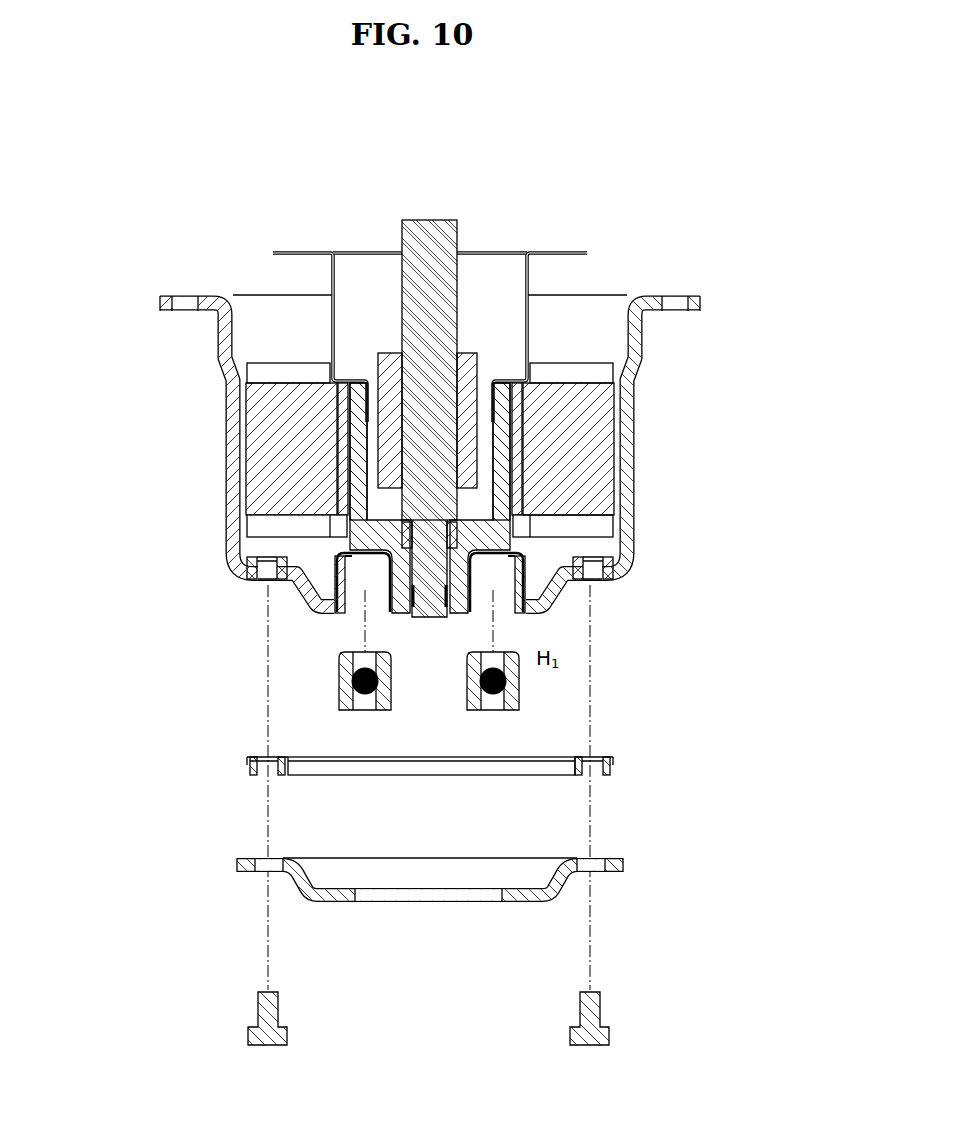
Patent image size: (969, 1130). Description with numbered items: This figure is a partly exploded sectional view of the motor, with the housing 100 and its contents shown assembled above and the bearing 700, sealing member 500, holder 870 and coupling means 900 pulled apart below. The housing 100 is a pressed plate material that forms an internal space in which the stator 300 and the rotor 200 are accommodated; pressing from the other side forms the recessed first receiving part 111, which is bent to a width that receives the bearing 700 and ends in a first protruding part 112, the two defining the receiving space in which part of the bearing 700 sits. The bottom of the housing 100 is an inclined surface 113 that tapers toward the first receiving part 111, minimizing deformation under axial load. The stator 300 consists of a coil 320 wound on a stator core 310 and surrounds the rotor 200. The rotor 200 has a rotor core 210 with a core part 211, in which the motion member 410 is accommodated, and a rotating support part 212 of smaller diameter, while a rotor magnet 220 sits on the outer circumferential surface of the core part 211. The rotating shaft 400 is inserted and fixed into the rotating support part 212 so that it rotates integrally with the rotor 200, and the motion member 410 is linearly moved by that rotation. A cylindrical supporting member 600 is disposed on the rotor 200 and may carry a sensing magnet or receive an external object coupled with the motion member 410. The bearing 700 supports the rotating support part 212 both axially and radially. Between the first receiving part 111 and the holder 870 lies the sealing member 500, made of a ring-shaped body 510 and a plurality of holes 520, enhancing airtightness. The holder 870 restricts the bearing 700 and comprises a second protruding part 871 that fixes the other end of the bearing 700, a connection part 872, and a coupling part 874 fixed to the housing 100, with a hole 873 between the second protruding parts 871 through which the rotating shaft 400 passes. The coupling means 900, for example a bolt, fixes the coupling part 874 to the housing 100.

The housing 100 is at (640, 335).
The first receiving part 111 is at (523, 584).
The first protruding part 112 is at (507, 548).
The inclined surface 113 is at (553, 572).
The rotor 200 is at (281, 488).
The rotor core 210 is at (313, 498).
The core part 211 is at (362, 470).
The rotating support part 212 is at (400, 568).
The rotor magnet 220 is at (343, 450).
The stator 300 is at (652, 439).
The stator core 310 is at (597, 420).
The coil 320 is at (610, 372).
The rotating shaft 400 is at (427, 220).
The motion member 410 is at (470, 352).
The sealing member 500 is at (490, 742).
The ring-shaped body 510 is at (523, 757).
The holes 520 is at (592, 764).
The supporting member 600 is at (575, 252).
The bearing 700 is at (520, 680).
The holder 870 is at (493, 923).
The second protruding part 871 is at (523, 899).
The connection part 872 is at (567, 889).
The hole 873 is at (420, 898).
The coupling part 874 is at (620, 884).
The coupling means 900 is at (637, 1005).